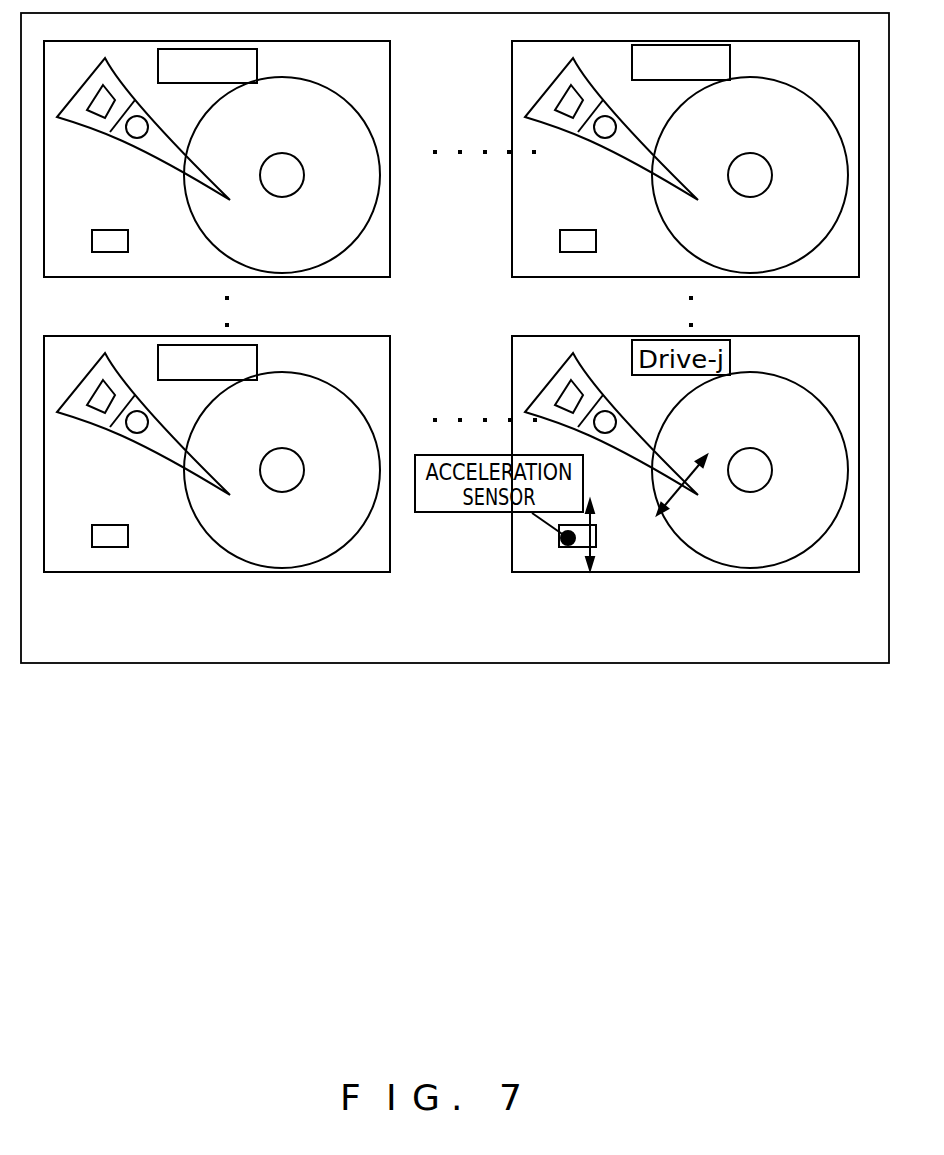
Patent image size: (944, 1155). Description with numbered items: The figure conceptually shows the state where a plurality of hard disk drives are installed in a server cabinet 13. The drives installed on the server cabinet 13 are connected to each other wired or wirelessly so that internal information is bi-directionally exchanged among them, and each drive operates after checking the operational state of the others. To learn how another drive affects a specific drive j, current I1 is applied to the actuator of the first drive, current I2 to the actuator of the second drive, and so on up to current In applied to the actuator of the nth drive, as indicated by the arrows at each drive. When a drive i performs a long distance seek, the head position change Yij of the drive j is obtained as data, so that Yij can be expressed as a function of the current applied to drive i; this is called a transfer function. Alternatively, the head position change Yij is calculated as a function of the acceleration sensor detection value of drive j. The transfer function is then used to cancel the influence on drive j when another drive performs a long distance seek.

The server cabinet 13 is at (455, 338).
The current applied to the actuator of drive 1 I1 is at (96, 31).
The current applied to the actuator of drive 2 I2 is at (217, 454).
The current applied to the actuator of drive n In is at (685, 159).
The head position change Yij is at (696, 487).